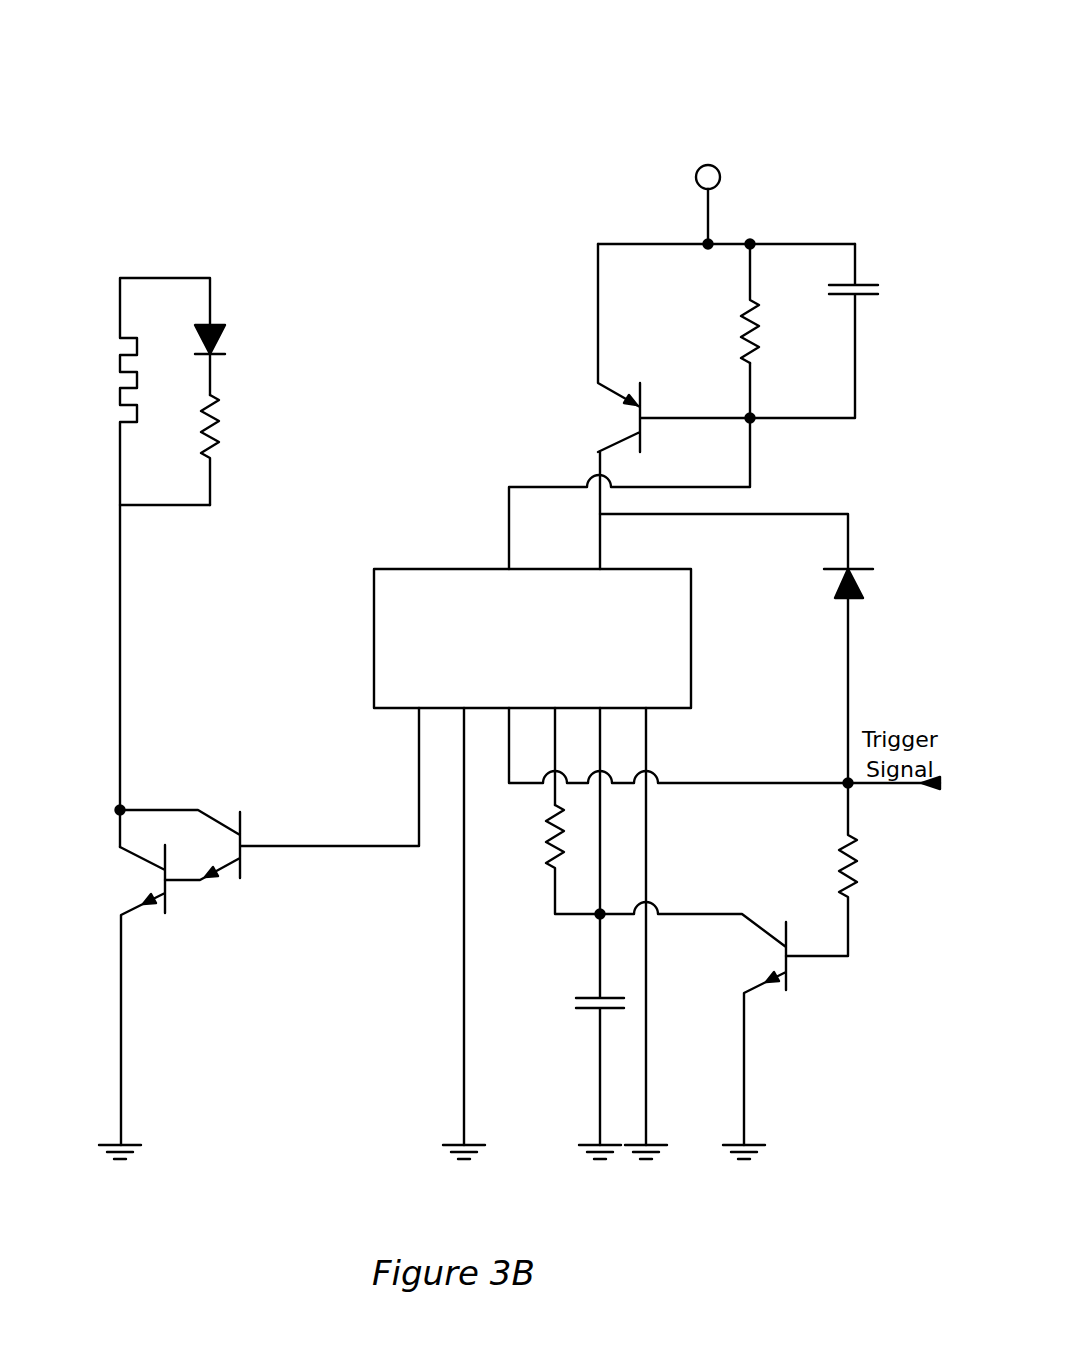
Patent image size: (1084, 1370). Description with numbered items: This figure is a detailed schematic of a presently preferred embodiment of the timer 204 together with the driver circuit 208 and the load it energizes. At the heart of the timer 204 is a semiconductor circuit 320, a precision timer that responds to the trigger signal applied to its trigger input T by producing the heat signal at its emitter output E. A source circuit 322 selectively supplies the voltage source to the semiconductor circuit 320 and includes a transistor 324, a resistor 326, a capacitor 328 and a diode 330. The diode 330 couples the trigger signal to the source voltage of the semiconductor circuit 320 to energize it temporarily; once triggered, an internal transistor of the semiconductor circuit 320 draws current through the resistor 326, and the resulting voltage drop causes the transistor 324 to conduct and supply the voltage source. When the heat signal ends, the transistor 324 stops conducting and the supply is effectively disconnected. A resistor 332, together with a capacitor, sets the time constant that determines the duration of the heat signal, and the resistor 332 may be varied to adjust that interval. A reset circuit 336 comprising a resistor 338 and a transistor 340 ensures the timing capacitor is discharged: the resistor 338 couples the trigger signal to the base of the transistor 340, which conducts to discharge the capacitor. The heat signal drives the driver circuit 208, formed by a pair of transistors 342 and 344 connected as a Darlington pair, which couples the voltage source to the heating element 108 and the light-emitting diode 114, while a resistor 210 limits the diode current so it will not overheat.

The heating element 108 is at (120, 357).
The light-emitting diode 114 is at (222, 348).
The resistor 210 is at (218, 415).
The timer 204 is at (657, 695).
The driver circuit 208 is at (259, 901).
The semiconductor circuit 320 is at (447, 569).
The source circuit 322 is at (764, 226).
The transistor 324 is at (697, 418).
The resistor 326 is at (757, 315).
The capacitor 328 is at (868, 285).
The diode 330 is at (858, 569).
The resistor 332 is at (548, 835).
The reset circuit 336 is at (755, 964).
The resistor 338 is at (852, 862).
The transistor 340 is at (786, 925).
The transistor 342 is at (245, 865).
The transistor 344 is at (165, 913).